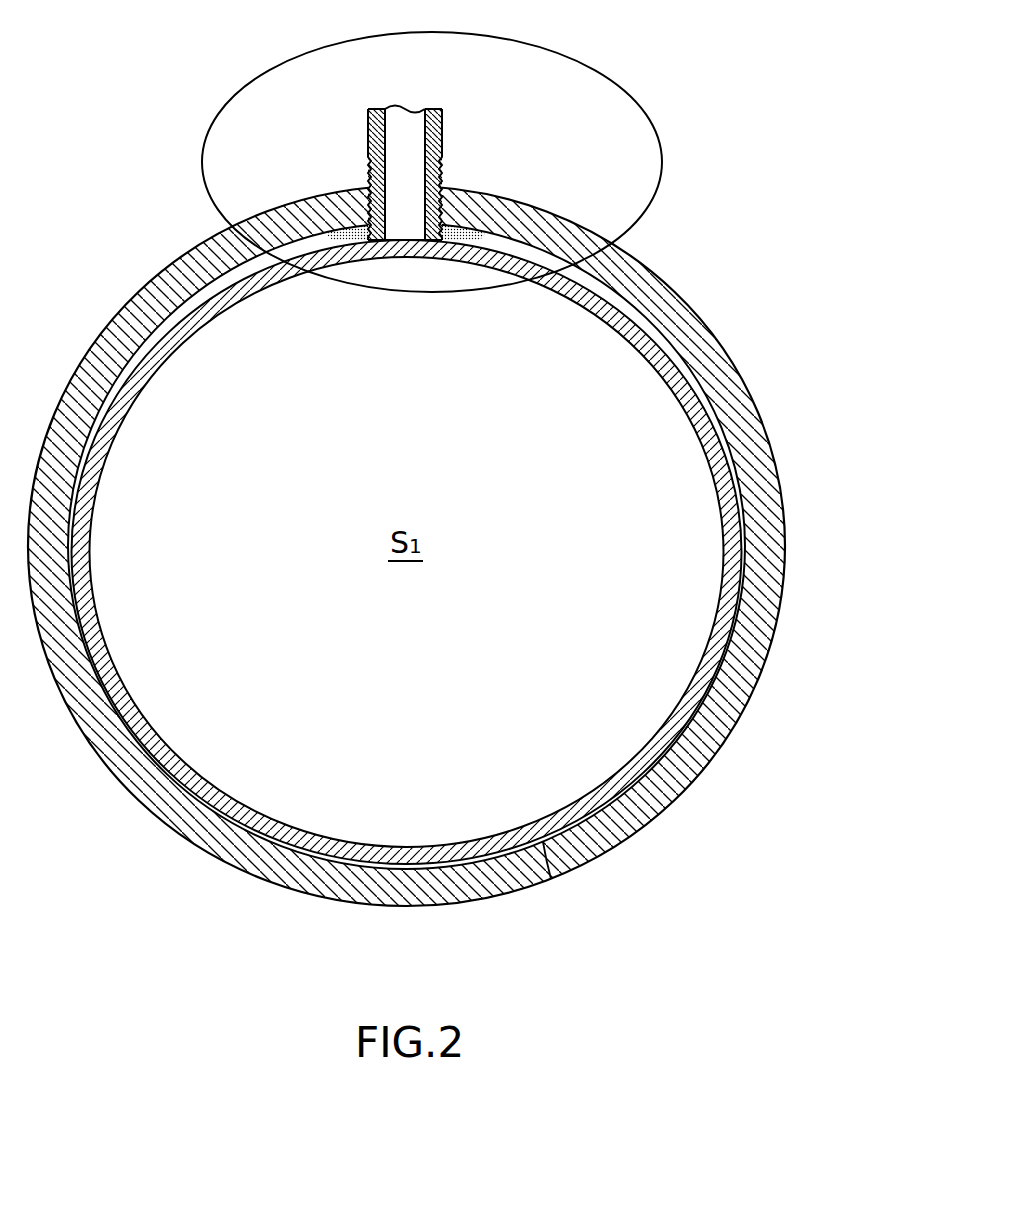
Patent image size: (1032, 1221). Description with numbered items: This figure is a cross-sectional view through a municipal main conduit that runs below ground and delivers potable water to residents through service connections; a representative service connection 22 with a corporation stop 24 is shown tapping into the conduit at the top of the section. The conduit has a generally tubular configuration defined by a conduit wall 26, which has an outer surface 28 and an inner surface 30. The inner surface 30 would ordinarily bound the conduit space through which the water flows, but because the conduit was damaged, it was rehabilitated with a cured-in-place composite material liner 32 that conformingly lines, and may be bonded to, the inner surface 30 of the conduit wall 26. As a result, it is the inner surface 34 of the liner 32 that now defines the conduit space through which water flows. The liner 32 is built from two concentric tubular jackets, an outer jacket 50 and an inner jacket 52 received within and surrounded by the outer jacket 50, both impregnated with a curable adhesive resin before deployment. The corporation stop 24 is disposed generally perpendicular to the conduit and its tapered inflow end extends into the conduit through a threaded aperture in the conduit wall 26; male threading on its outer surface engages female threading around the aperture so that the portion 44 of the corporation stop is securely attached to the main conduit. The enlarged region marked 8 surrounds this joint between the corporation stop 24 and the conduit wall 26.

The service connection 22 is at (460, 108).
The corporation stop 24 is at (443, 147).
The portion of the corporation stop 44 is at (452, 191).
The conduit wall 26 is at (670, 285).
The outer surface 28 is at (737, 367).
The inner surface 30 is at (657, 762).
The liner 32 is at (128, 676).
The inner surface of the liner 34 is at (192, 773).
The inner jacket 52 is at (583, 798).
The outer jacket 50 is at (551, 879).
The detail view region 8 is at (650, 117).